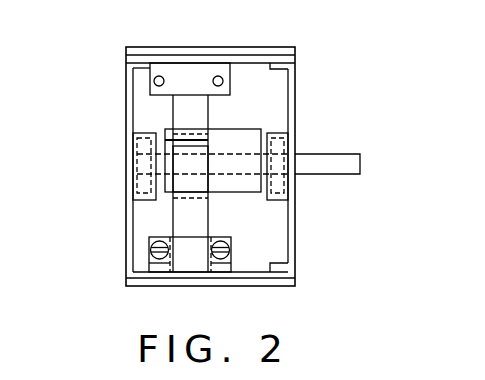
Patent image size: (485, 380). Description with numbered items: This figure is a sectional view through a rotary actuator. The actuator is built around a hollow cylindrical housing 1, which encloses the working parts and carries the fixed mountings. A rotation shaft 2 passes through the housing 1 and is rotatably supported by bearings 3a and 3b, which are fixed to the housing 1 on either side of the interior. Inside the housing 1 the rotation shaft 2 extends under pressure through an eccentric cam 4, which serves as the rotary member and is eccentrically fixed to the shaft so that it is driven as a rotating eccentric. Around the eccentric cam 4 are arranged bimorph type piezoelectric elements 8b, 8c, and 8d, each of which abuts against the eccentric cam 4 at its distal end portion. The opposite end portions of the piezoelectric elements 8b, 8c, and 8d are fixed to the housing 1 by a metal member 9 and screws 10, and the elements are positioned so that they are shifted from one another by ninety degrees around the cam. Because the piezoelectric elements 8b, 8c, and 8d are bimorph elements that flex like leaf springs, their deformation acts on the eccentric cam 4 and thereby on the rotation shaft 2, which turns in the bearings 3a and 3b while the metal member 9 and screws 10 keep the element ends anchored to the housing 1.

The housing 1 is at (163, 47).
The rotation shaft 2 is at (337, 155).
The bearing 3a is at (283, 182).
The bearing 3b is at (145, 184).
The eccentric cam 4 is at (237, 195).
The piezoelectric element 8b is at (192, 105).
The piezoelectric element 8c is at (168, 138).
The piezoelectric element 8d is at (183, 220).
The metal member 9 is at (187, 263).
The screw 10 is at (220, 258).